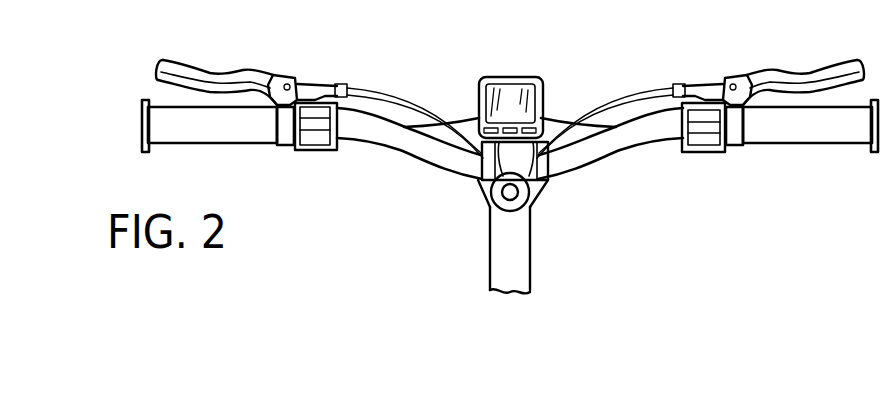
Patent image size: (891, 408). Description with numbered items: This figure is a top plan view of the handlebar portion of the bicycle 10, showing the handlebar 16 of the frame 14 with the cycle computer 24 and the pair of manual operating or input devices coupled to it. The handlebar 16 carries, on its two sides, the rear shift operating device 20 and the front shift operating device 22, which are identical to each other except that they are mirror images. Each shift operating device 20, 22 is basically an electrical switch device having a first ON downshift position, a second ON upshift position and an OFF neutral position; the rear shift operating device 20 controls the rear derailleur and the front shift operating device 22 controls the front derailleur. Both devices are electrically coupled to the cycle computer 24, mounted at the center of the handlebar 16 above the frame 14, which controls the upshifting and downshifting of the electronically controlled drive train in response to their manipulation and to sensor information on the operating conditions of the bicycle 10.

The bicycle 10 is at (510, 159).
The frame 14 is at (500, 253).
The handlebar 16 is at (583, 176).
The rear shift operating device 20 is at (700, 152).
The front shift operating device 22 is at (313, 150).
The cycle computer 24 is at (528, 72).